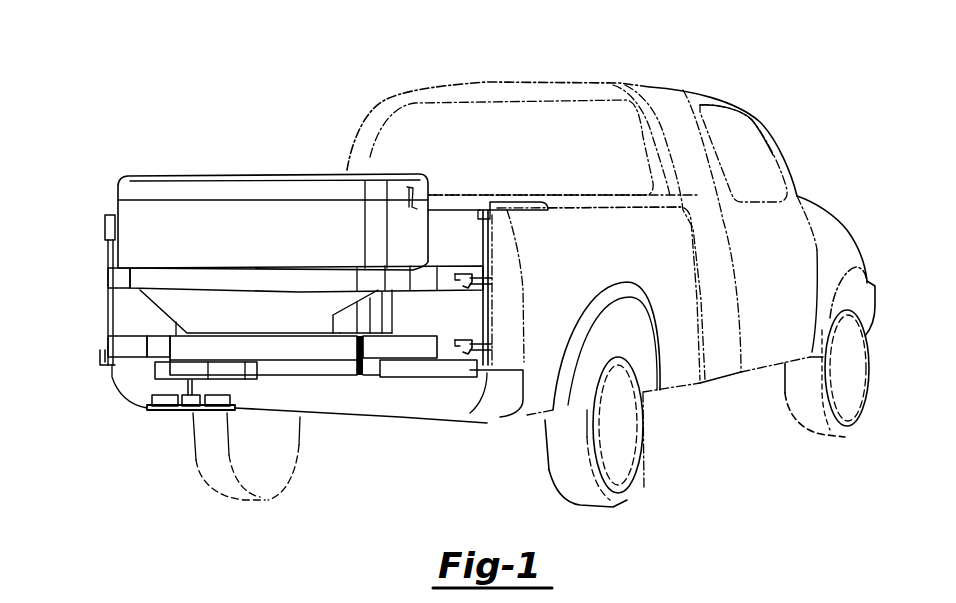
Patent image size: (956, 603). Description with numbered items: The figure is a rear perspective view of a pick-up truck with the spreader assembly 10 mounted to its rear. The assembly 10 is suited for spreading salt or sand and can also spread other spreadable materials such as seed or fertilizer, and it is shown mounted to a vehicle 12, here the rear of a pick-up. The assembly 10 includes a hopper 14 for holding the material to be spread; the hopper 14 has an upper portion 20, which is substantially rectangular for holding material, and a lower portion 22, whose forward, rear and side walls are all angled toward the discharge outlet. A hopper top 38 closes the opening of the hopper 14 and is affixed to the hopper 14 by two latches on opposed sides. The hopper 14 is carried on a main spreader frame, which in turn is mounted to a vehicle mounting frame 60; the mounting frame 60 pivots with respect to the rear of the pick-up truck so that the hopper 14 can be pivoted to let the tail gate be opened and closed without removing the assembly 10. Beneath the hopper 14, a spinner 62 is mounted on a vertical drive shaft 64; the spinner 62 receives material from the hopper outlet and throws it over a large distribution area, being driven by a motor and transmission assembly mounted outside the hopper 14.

The spreader assembly 10 is at (152, 152).
The vehicle 12 is at (364, 90).
The hopper 14 is at (137, 215).
The upper portion 20 is at (268, 243).
The lower portion 22 is at (182, 302).
The hopper top 38 is at (280, 188).
The vehicle mounting frame 60 is at (440, 350).
The spinner 62 is at (172, 400).
The vertical drive shaft 64 is at (185, 385).